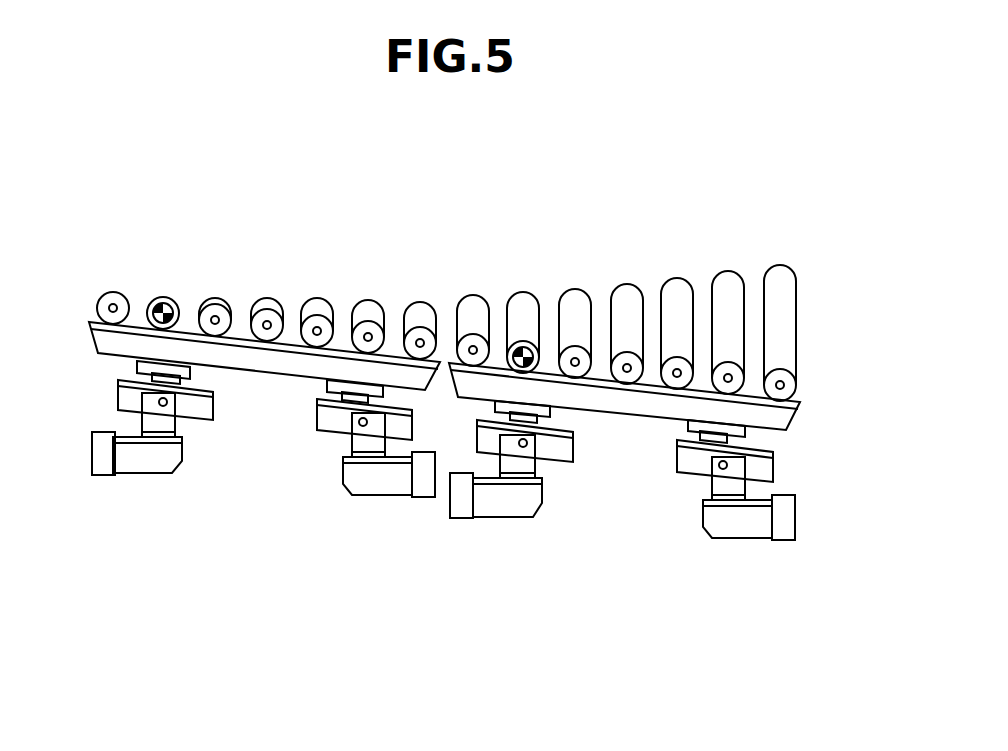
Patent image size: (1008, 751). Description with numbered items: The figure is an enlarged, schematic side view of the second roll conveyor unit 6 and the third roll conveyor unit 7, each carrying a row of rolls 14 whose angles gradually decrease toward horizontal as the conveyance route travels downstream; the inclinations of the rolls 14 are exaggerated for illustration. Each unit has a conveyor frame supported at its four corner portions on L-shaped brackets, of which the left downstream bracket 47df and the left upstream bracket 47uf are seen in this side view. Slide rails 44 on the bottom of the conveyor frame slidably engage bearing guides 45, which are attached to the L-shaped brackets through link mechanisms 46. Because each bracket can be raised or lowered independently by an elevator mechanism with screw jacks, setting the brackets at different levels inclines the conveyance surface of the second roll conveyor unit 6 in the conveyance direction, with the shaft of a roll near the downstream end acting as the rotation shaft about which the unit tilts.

The second roll conveyor unit 6 is at (650, 276).
The third roll conveyor unit 7 is at (286, 282).
The rolls 14 is at (652, 316).
The slide rails 44 is at (212, 392).
The bearing guides 45 is at (140, 382).
The link mechanisms 46 is at (170, 422).
The left downstream L-shaped bracket 47df is at (137, 467).
The left upstream L-shaped bracket 47uf is at (375, 485).